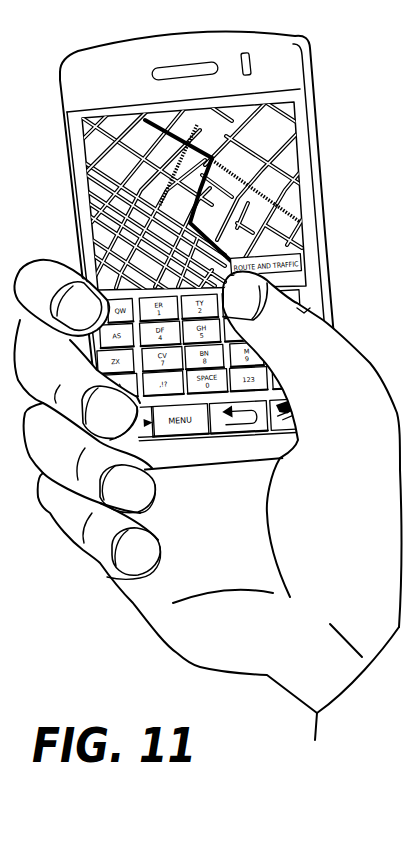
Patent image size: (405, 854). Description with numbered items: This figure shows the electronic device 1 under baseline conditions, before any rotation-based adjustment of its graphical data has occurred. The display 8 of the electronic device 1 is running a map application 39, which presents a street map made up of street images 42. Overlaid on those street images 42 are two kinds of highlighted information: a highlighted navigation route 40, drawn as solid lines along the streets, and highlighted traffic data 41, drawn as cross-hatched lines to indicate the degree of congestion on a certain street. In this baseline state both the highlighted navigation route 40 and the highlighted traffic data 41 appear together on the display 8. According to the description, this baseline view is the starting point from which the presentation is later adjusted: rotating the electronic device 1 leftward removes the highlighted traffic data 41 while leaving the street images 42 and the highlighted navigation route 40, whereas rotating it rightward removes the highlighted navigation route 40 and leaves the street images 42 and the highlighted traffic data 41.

The electronic device 1 is at (338, 73).
The display 8 is at (287, 137).
The map application 39 is at (88, 146).
The highlighted navigation route 40 is at (180, 137).
The highlighted traffic data 41 is at (237, 172).
The street images 42 is at (112, 137).